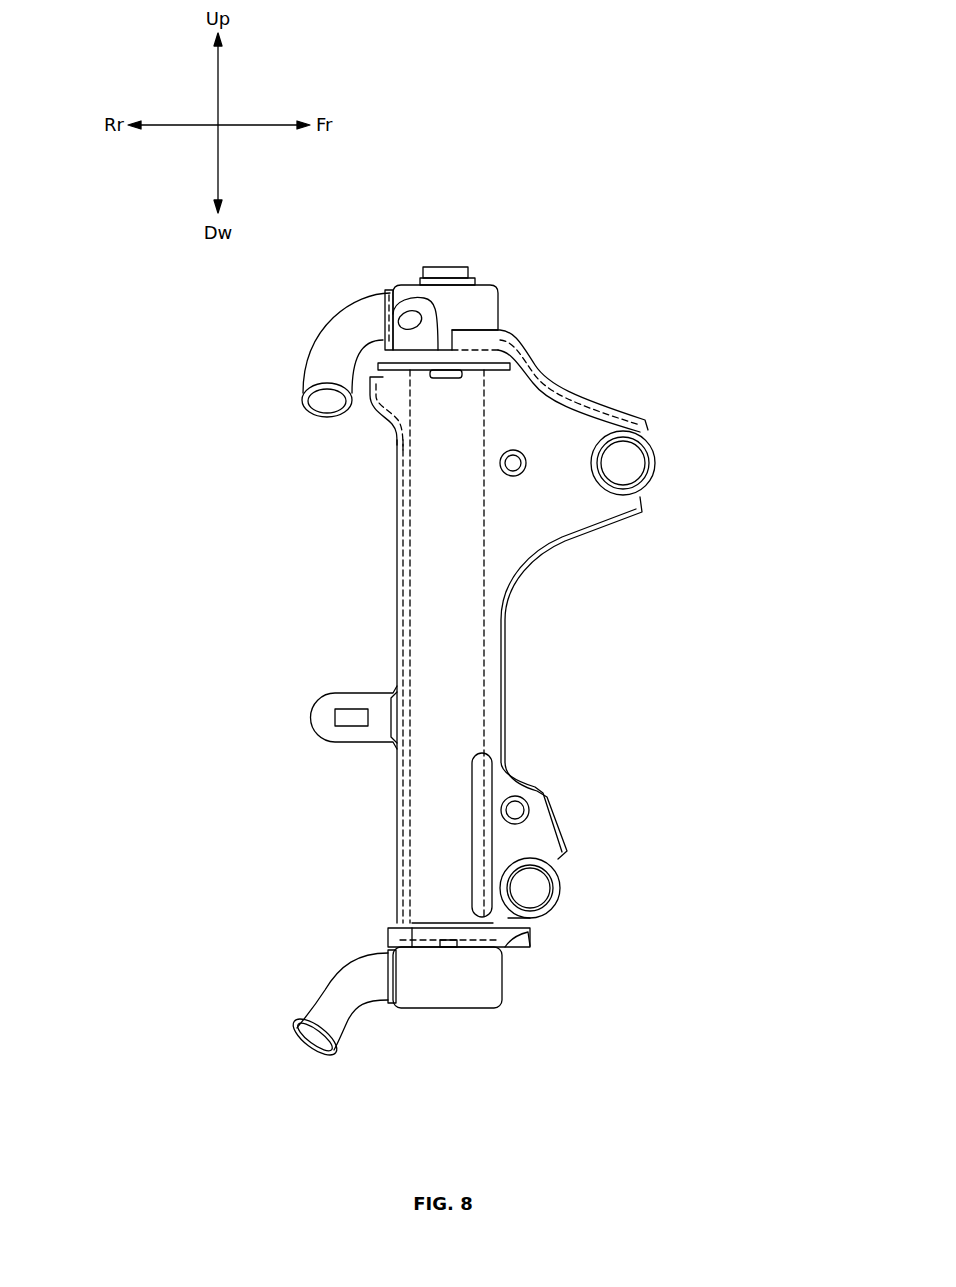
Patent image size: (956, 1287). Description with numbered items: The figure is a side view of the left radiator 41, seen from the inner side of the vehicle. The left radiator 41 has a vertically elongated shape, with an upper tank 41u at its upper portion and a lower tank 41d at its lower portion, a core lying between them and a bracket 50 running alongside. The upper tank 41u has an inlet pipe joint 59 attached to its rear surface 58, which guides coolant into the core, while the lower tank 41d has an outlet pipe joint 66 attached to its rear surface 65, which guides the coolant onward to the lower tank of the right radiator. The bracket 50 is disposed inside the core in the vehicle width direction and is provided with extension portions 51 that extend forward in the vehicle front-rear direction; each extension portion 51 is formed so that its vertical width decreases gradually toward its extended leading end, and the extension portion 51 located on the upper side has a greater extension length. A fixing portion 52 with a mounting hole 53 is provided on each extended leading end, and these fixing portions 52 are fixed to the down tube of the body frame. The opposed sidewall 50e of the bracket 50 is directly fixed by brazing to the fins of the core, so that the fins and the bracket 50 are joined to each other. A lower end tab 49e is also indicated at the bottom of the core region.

The left radiator 41 is at (515, 247).
The upper tank 41u is at (487, 308).
The lower tank 41d is at (437, 992).
The rear surface 58 is at (388, 290).
The inlet pipe joint 59 is at (342, 318).
The rear surface 65 is at (393, 968).
The outlet pipe joint 66 is at (338, 998).
The bracket 50 is at (460, 690).
The opposed sidewall 50e is at (430, 868).
The extension portion 51 is at (545, 505).
The fixing portion 52 is at (657, 480).
The mounting hole 53 is at (635, 458).
The lower end tab 49e is at (523, 947).